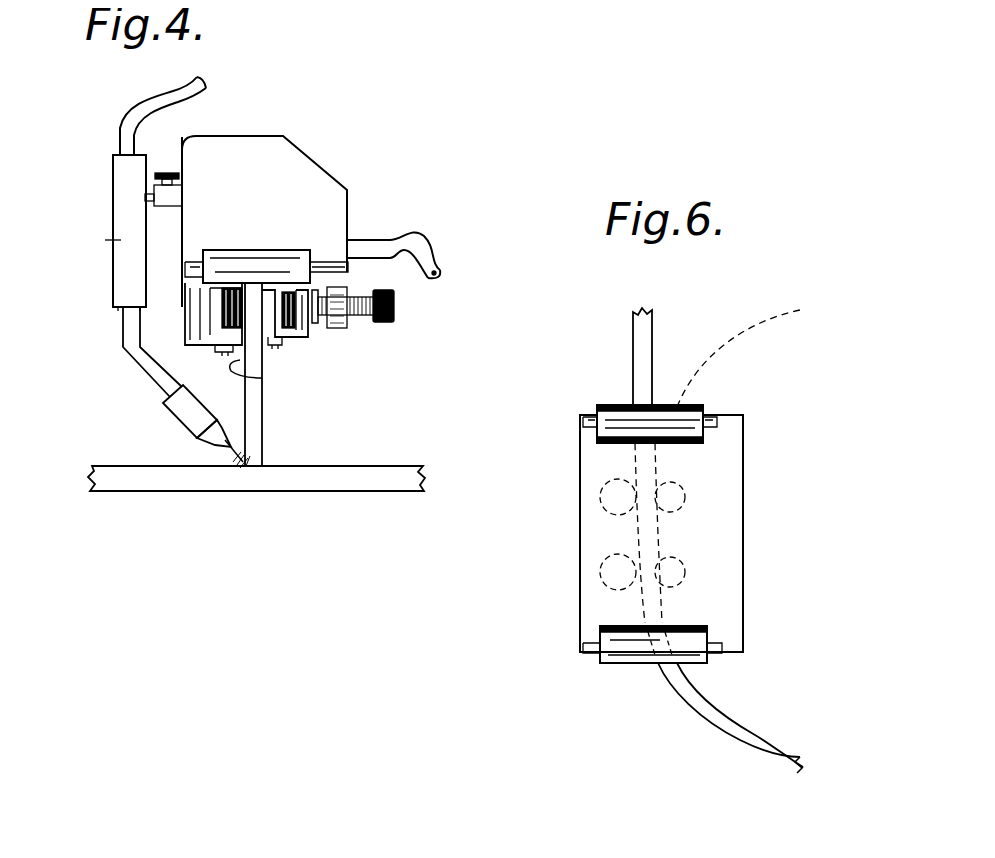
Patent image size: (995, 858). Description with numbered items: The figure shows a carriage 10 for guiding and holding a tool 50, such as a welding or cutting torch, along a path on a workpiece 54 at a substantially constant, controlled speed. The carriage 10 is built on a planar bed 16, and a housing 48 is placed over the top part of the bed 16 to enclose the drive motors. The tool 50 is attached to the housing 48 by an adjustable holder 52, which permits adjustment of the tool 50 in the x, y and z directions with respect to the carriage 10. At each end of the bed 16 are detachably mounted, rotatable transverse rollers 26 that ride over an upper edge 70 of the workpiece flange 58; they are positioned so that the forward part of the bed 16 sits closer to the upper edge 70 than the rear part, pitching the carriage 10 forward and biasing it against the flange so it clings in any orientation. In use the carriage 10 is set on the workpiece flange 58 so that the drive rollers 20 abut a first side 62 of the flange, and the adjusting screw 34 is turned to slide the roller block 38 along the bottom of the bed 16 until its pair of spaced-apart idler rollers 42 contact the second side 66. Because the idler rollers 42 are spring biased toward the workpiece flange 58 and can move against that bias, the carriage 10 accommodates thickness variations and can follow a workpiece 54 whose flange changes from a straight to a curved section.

In FIG. 4, the carriage 10 is at (351, 182).
In FIG. 4, the planar bed 16 is at (337, 267).
In FIG. 6, the planar bed 16 is at (580, 600).
In FIG. 4, the drive rollers 20 is at (222, 305).
In FIG. 6, the drive rollers 20 is at (607, 552).
In FIG. 4, the transverse rollers 26 is at (270, 257).
In FIG. 6, the transverse rollers 26 is at (627, 417).
In FIG. 4, the adjusting screw 34 is at (357, 312).
In FIG. 4, the roller block 38 is at (297, 333).
In FIG. 4, the idler rollers 42 is at (285, 283).
In FIG. 6, the idler rollers 42 is at (686, 495).
In FIG. 4, the housing 48 is at (277, 135).
In FIG. 4, the tool 50 is at (120, 243).
In FIG. 4, the adjustable holder 52 is at (165, 172).
In FIG. 4, the workpiece 54 is at (140, 470).
In FIG. 4, the workpiece flange 58 is at (253, 435).
In FIG. 4, the first side 62 is at (262, 378).
In FIG. 4, the second side 66 is at (262, 400).
In FIG. 6, the upper edge 70 is at (640, 340).